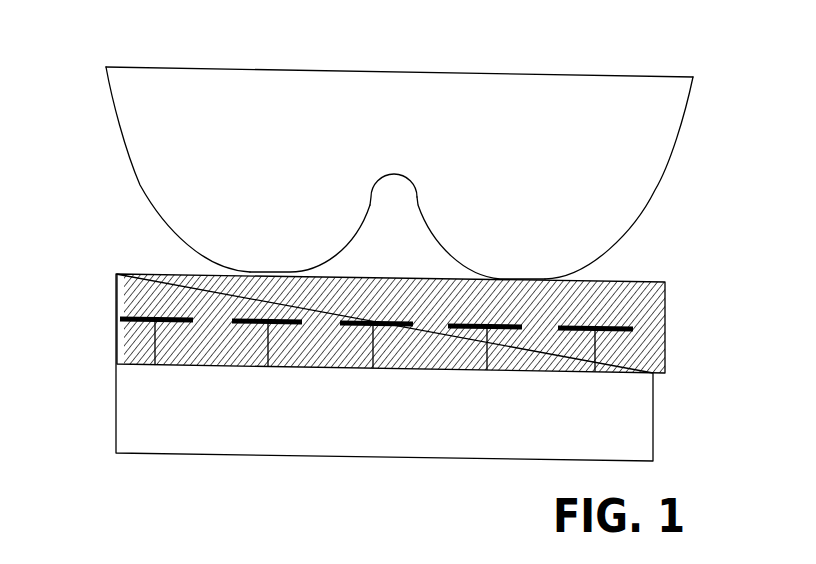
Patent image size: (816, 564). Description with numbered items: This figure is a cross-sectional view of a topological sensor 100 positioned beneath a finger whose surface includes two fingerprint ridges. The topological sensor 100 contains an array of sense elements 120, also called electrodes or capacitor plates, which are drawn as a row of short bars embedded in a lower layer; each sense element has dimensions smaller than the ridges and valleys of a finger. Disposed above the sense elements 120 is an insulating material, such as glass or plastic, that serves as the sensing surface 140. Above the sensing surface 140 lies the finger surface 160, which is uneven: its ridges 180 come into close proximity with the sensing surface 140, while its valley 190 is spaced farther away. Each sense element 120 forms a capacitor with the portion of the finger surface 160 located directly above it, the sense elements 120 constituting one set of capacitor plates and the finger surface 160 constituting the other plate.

The topological sensor 100 is at (115, 362).
The sense elements 120 is at (665, 329).
The sensing surface 140 is at (130, 296).
The finger surface 160 is at (240, 98).
The ridges 180 is at (127, 185).
The valleys 190 is at (372, 213).